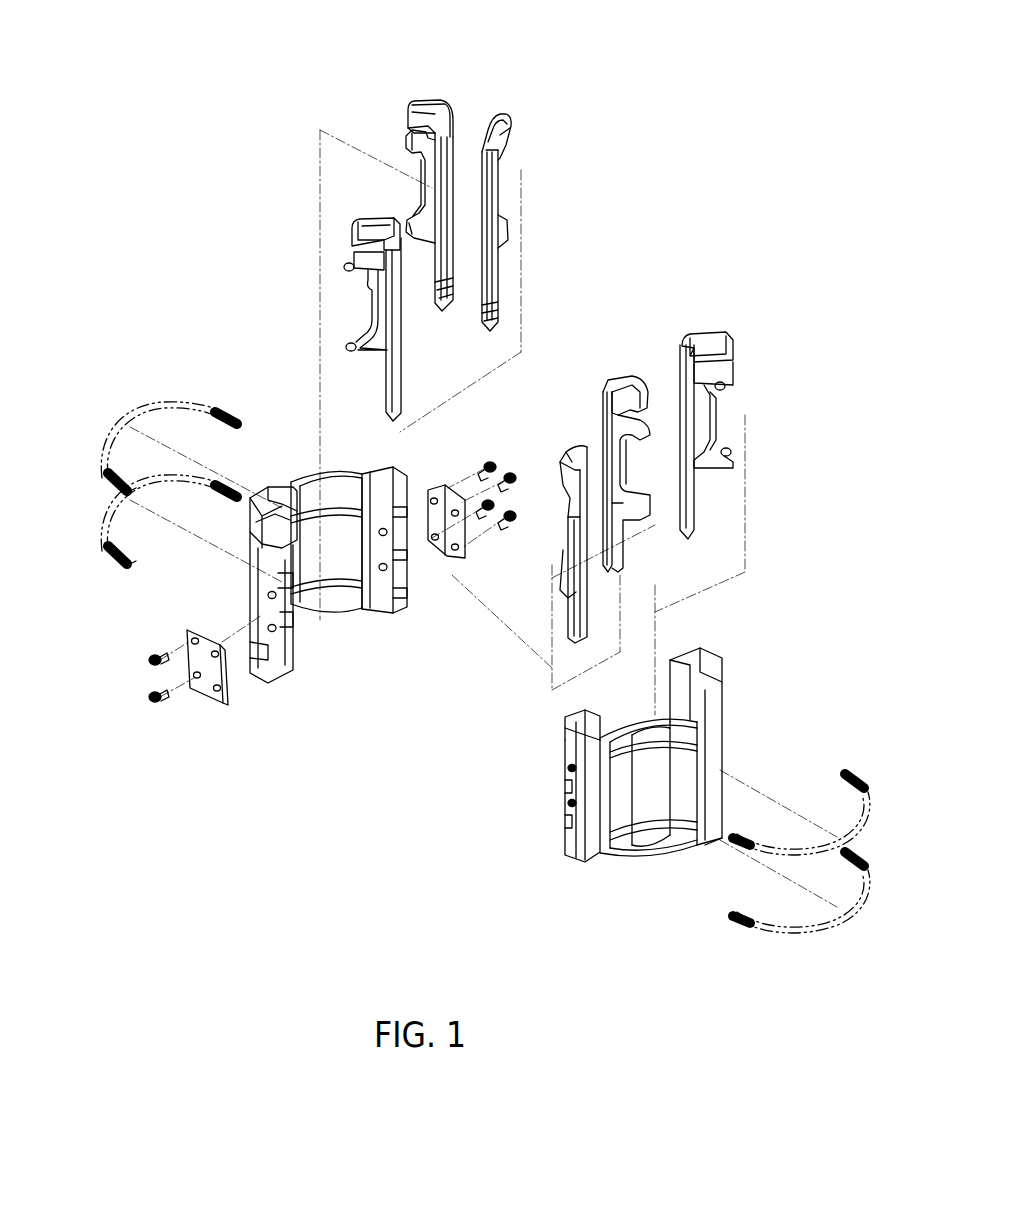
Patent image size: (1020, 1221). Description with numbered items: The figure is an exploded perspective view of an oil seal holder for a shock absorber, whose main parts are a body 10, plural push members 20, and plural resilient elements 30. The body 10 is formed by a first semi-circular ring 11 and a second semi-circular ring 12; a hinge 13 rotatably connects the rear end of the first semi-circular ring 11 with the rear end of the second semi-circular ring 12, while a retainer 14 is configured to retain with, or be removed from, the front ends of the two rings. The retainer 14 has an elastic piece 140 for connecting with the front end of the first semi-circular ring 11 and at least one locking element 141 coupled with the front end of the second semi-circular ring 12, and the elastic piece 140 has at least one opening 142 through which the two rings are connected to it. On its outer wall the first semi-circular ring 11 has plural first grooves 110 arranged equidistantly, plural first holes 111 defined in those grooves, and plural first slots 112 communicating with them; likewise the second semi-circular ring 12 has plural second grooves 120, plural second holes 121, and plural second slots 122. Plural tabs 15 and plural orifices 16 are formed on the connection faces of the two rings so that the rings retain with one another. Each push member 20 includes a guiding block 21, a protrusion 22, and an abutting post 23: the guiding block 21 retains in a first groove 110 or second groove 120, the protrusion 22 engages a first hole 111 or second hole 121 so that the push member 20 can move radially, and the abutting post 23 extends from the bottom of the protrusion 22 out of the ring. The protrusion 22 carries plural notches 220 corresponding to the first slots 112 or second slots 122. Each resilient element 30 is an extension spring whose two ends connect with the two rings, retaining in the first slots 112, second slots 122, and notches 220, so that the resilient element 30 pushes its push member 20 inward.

The body 10 is at (655, 900).
The first semi-circular ring 11 is at (330, 582).
The second semi-circular ring 12 is at (577, 838).
The hinge 13 is at (450, 560).
The retainer 14 is at (185, 725).
The tabs 15 is at (300, 602).
The orifices 16 is at (400, 560).
The push members 20 is at (425, 100).
The guiding block 21 is at (355, 222).
The protrusion 22 is at (373, 312).
The abutting post 23 is at (398, 375).
The resilient elements 30 is at (175, 405).
The first grooves 110 is at (312, 481).
The first holes 111 is at (262, 585).
The first slots 112 is at (405, 512).
The second grooves 120 is at (720, 666).
The second holes 121 is at (692, 782).
The second slots 122 is at (718, 720).
The elastic piece 140 is at (152, 680).
The locking element 141 is at (570, 769).
The opening 142 is at (210, 702).
The notches 220 is at (350, 268).